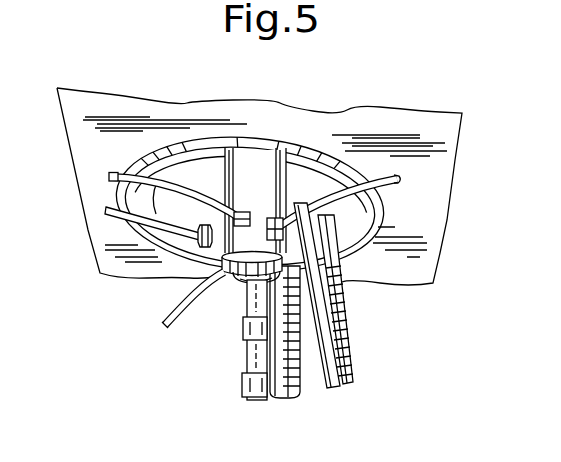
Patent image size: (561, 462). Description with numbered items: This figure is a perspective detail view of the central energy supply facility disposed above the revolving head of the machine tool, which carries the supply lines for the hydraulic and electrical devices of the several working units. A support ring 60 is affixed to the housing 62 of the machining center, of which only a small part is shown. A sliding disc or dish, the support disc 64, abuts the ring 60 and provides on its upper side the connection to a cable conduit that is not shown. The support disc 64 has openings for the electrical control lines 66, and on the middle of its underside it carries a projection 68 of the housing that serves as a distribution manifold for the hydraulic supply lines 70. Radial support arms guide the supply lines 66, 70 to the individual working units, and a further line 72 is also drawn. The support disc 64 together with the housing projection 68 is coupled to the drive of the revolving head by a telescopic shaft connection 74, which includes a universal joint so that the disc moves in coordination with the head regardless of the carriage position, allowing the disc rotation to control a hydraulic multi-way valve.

The support ring 60 is at (347, 163).
The housing 62 is at (418, 218).
The support disc 64 is at (209, 172).
The electrical control lines 66 is at (340, 330).
The housing projection 68 is at (257, 170).
The hydraulic supply lines 70 is at (110, 173).
The hose 72 is at (163, 325).
The telescopic shaft connection 74 is at (236, 342).